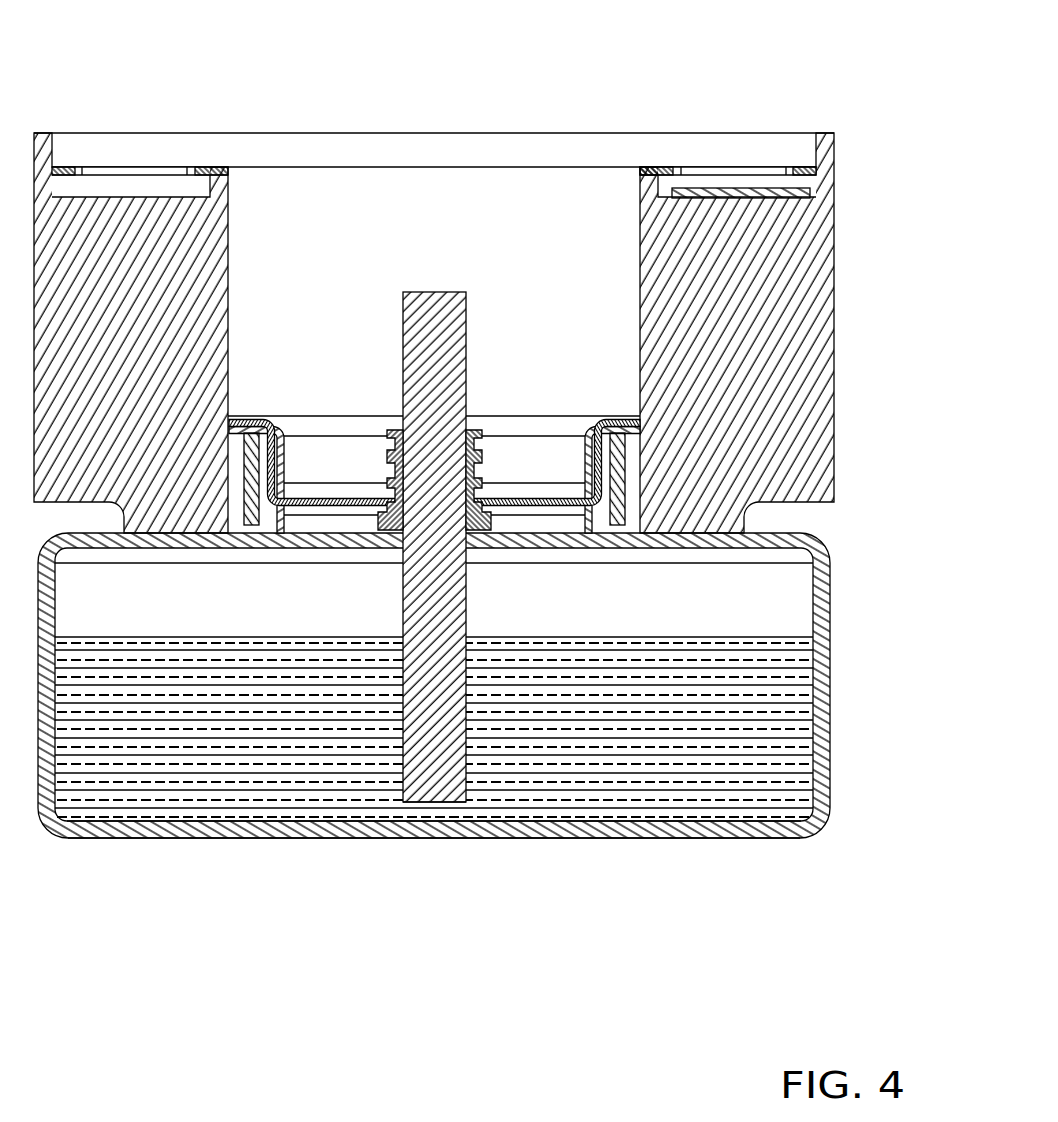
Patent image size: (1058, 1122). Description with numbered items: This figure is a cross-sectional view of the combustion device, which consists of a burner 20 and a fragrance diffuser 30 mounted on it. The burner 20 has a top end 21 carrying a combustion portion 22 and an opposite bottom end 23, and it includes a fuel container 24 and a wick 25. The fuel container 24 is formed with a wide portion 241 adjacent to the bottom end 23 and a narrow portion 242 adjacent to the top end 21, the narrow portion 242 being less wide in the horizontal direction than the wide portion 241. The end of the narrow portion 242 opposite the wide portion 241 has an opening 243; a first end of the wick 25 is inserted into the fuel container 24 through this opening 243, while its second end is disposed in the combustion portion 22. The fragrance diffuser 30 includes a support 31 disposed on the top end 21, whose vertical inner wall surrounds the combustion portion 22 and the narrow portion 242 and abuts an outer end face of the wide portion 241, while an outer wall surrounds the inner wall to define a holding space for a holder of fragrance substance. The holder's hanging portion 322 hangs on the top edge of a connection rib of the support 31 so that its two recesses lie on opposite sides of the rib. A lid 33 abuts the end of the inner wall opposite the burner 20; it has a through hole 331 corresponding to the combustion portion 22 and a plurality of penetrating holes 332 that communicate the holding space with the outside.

The burner 20 is at (487, 518).
The top end 21 is at (583, 398).
The combustion portion 22 is at (434, 493).
The bottom end 23 is at (455, 858).
The fuel container 24 is at (487, 518).
The wide portion 241 is at (816, 675).
The narrow portion 242 is at (615, 458).
The opening 243 is at (630, 407).
The wick 25 is at (422, 780).
The fragrance diffuser 30 is at (471, 267).
The support 31 is at (851, 338).
The hanging portion 322 is at (772, 192).
The lid 33 is at (471, 302).
The through hole 331 is at (348, 172).
The penetrating holes 332 is at (130, 170).